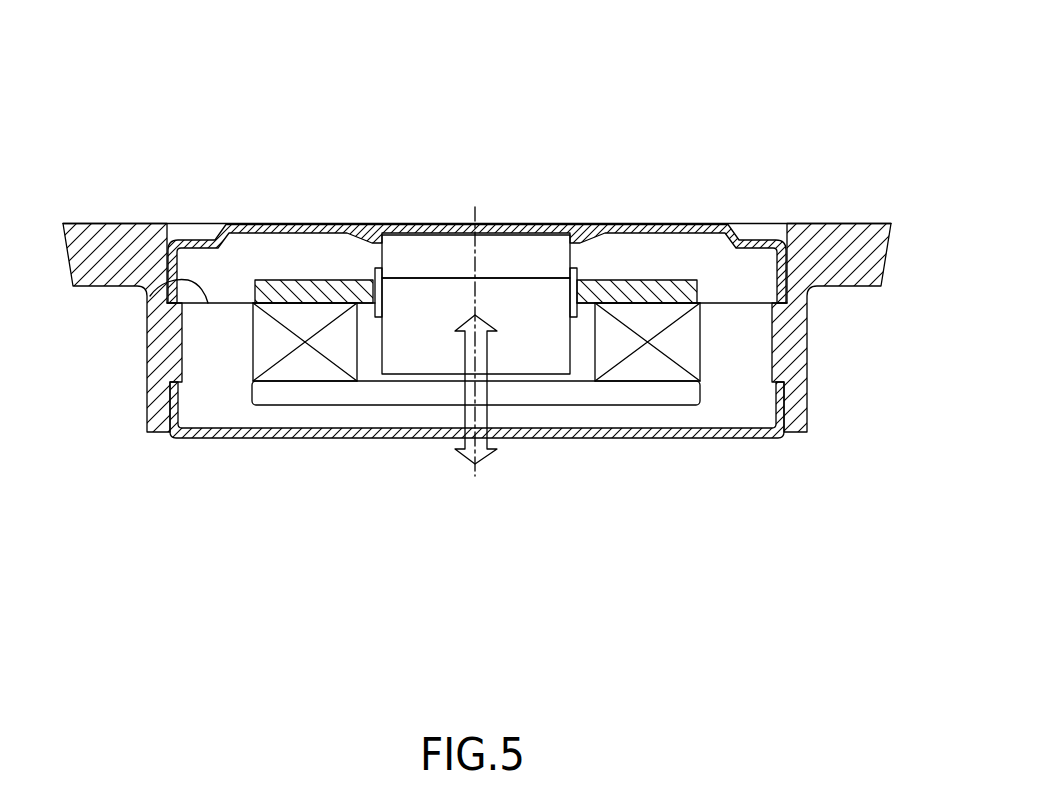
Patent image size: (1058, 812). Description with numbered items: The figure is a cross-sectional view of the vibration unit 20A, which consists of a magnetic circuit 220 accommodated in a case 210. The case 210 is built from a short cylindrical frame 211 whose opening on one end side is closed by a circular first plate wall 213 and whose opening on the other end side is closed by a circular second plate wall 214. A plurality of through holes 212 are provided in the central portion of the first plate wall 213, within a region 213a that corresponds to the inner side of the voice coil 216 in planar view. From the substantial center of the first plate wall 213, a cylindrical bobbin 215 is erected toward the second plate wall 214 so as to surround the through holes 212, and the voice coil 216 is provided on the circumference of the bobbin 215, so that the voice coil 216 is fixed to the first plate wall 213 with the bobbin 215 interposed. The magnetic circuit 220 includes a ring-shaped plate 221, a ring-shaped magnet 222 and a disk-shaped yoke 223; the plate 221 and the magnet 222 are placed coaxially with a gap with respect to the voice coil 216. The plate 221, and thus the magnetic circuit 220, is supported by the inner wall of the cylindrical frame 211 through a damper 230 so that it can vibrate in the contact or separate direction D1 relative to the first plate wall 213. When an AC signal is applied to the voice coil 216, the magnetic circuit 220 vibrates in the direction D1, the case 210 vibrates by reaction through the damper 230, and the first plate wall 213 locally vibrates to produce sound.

The vibration unit 20A is at (505, 115).
The case 210 is at (139, 203).
The cylindrical frame 211 is at (147, 347).
The through holes 212 is at (397, 230).
The first plate wall 213 is at (252, 224).
The region 213a is at (577, 218).
The second plate wall 214 is at (275, 440).
The bobbin 215 is at (381, 341).
The voice coil 216 is at (577, 270).
The magnetic circuit 220 is at (887, 313).
The plate 221 is at (657, 280).
The magnet 222 is at (703, 347).
The yoke 223 is at (700, 396).
The damper 230 is at (150, 296).
The contact or separate direction D1 is at (487, 457).